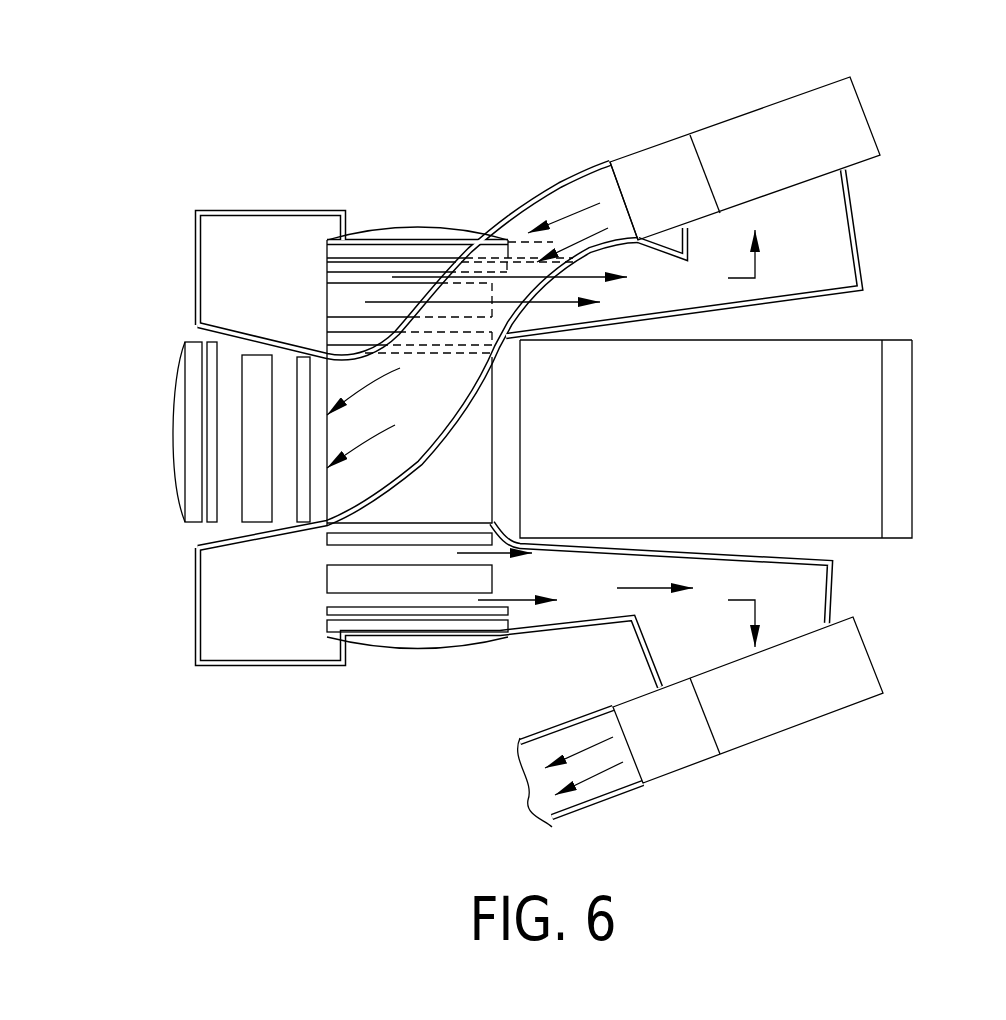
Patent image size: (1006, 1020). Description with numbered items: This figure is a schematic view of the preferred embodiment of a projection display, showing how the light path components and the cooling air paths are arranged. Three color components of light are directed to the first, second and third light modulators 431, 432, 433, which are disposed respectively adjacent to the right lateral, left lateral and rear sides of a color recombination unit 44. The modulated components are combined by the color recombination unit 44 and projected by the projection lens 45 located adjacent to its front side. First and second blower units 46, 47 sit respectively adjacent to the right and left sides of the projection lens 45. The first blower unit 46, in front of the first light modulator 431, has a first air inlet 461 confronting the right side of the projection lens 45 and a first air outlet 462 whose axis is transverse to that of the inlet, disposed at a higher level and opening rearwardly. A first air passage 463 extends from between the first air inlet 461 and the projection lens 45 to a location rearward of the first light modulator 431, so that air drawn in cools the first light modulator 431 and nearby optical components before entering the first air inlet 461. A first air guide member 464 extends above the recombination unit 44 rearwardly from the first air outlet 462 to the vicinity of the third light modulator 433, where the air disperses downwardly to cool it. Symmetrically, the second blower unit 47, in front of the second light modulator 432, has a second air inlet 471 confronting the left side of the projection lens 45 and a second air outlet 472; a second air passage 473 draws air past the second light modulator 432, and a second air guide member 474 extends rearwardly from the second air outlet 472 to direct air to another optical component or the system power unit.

The color recombination unit 44 is at (670, 340).
The projection lens 45 is at (837, 410).
The first blower unit 46 is at (787, 127).
The first air inlet 461 is at (786, 192).
The first air outlet 462 is at (623, 195).
The first air passage 463 is at (837, 233).
The first air guide member 464 is at (550, 215).
The second blower unit 47 is at (838, 657).
The second air inlet 471 is at (767, 633).
The second air outlet 472 is at (623, 790).
The second air passage 473 is at (580, 603).
The second air guide member 474 is at (533, 763).
The first light modulator 431 is at (325, 284).
The second light modulator 432 is at (325, 595).
The third light modulator 433 is at (240, 523).